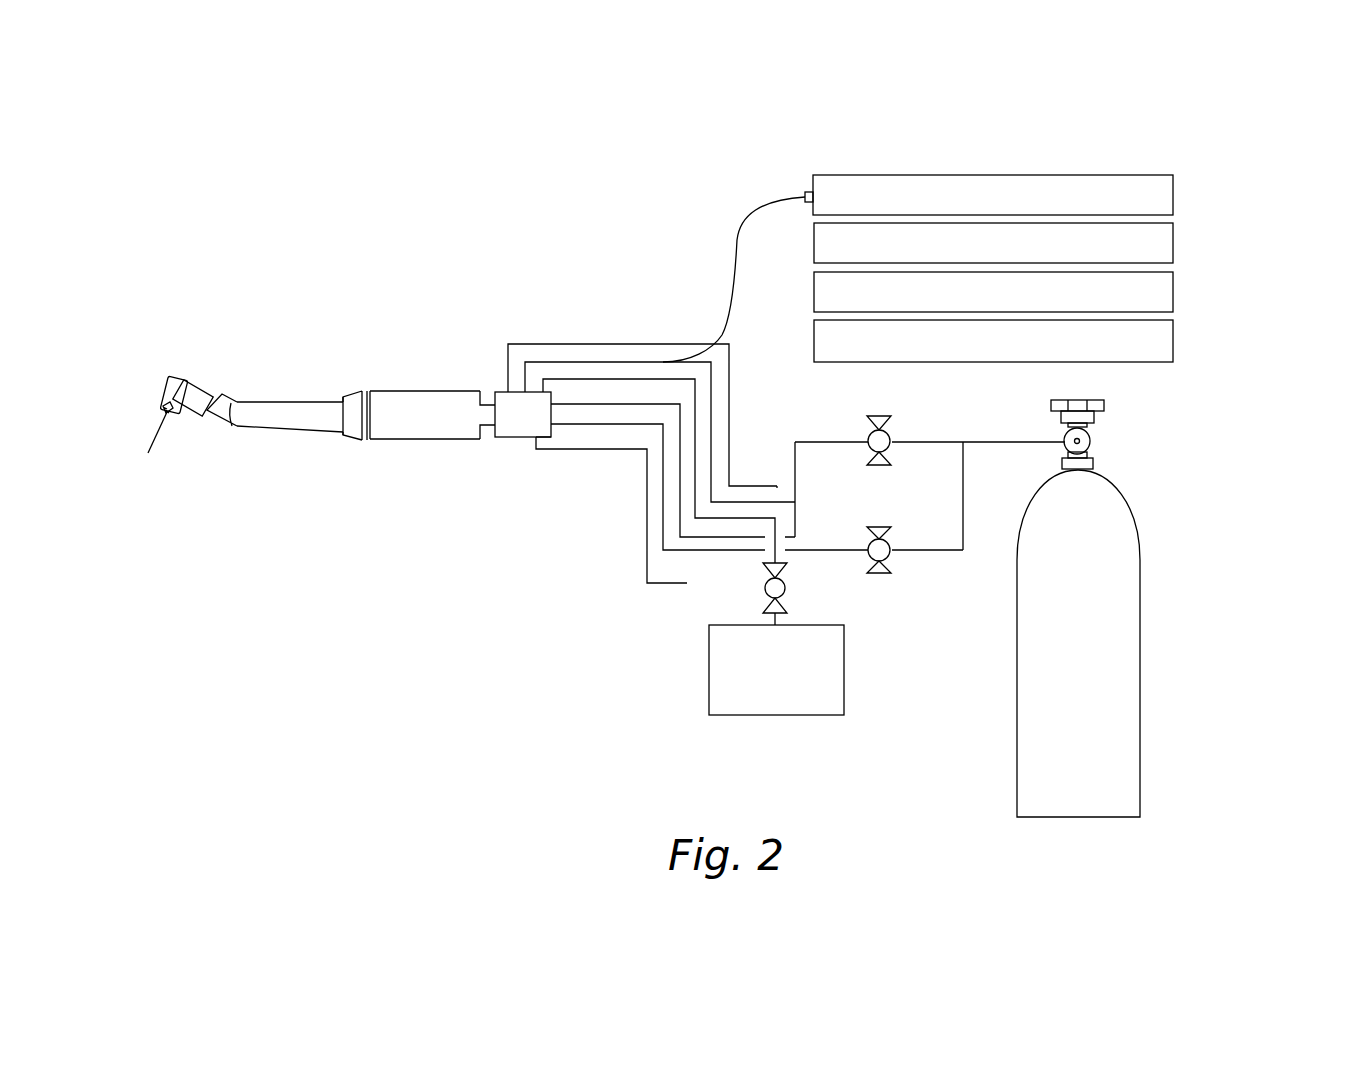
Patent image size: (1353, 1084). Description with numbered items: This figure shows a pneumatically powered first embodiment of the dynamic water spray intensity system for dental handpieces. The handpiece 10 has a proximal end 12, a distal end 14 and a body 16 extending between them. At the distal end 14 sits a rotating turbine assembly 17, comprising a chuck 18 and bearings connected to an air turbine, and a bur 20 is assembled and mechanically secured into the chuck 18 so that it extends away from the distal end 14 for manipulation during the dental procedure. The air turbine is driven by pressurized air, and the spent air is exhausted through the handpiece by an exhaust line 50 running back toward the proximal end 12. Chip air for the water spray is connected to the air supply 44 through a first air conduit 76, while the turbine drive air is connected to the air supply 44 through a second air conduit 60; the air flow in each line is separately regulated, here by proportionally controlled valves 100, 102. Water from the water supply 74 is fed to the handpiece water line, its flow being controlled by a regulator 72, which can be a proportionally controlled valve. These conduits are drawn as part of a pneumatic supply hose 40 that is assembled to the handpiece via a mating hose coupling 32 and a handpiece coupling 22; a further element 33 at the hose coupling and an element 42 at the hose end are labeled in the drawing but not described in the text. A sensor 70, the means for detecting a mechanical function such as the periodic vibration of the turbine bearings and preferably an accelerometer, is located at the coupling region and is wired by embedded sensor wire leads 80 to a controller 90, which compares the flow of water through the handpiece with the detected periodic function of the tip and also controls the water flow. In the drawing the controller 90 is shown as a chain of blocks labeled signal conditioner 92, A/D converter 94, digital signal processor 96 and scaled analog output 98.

The handpiece 10 is at (304, 336).
The proximal end 12 is at (480, 440).
The distal end 14 is at (202, 390).
The body 16 is at (404, 440).
The rotating turbine assembly 17 is at (162, 405).
The chuck 18 is at (177, 378).
The bur 20 is at (157, 433).
The handpiece coupling 22 is at (482, 392).
The hose coupling 32 is at (515, 437).
The manifold outlet 33 is at (551, 432).
The pneumatic supply hose 40 is at (580, 362).
The conduit fitting 42 is at (753, 485).
The exhaust line 50 is at (647, 540).
The second air conduit 60 is at (686, 422).
The sensor 70 is at (540, 392).
The regulator 72 is at (788, 585).
The water supply 74 is at (802, 715).
The first air conduit 76 is at (828, 440).
The embedded sensor wire leads 80 is at (728, 293).
The controller 90 is at (1057, 266).
The signal conditioner 92 is at (1173, 192).
The A/D converter 94 is at (1173, 238).
The digital signal processor 96 is at (1173, 290).
The scaled analog output 98 is at (1027, 342).
The proportionally controlled valve 100 is at (883, 573).
The proportionally controlled valve 102 is at (893, 440).
The air supply 44 is at (1142, 625).